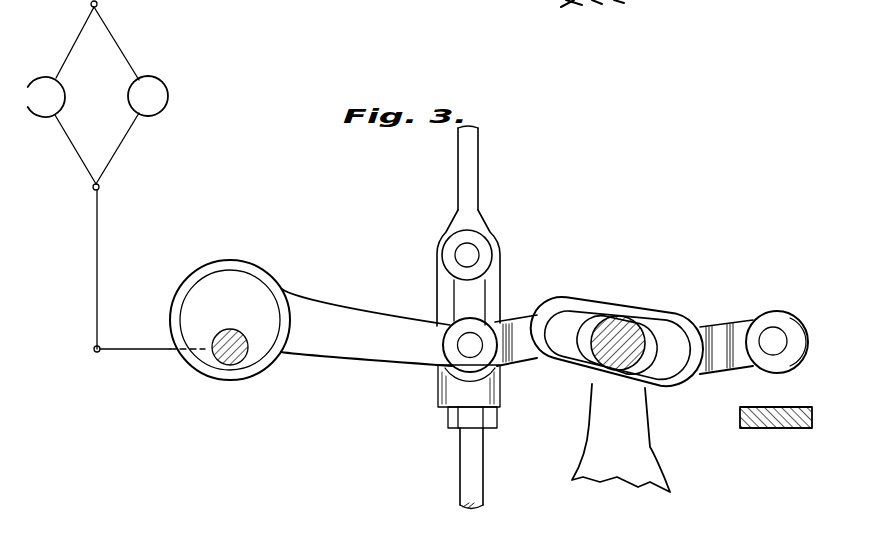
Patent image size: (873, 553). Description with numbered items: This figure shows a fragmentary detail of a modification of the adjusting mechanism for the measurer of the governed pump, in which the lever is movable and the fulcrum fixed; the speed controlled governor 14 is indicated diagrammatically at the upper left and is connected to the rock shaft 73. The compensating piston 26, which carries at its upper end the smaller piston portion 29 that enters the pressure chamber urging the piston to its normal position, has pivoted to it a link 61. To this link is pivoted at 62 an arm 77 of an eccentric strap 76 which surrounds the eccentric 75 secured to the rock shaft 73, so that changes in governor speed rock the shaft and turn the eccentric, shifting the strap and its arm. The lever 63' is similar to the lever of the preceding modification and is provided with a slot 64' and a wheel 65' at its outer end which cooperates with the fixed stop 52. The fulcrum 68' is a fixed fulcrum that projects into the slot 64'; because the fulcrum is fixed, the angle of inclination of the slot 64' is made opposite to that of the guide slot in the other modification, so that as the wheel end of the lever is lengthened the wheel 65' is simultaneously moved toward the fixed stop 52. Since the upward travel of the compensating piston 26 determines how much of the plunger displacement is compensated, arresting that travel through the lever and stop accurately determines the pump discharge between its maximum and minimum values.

The governor linkage 14 is at (116, 176).
The smaller piston portion 29 is at (470, 167).
The link 61 is at (483, 297).
The pivot 62 is at (466, 350).
The compensating piston 26 is at (472, 470).
The eccentric strap 76 is at (255, 262).
The eccentric 75 is at (254, 298).
The rock shaft 73 is at (234, 358).
The arm 77 is at (383, 349).
The lever 63' is at (617, 320).
The fixed fulcrum 68' is at (647, 318).
The wheel 65' is at (754, 320).
The slot 64' is at (603, 404).
The fixed stop 52 is at (775, 430).